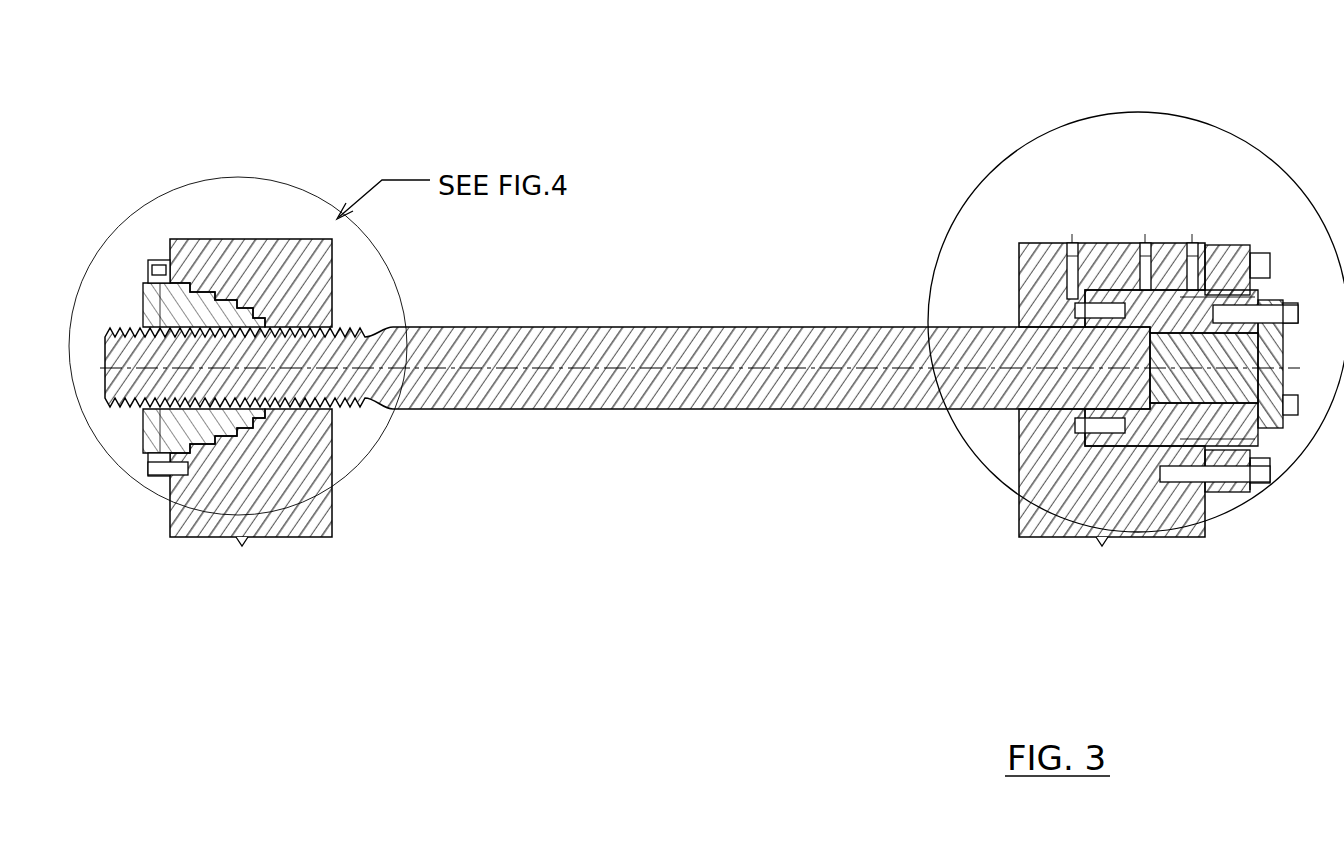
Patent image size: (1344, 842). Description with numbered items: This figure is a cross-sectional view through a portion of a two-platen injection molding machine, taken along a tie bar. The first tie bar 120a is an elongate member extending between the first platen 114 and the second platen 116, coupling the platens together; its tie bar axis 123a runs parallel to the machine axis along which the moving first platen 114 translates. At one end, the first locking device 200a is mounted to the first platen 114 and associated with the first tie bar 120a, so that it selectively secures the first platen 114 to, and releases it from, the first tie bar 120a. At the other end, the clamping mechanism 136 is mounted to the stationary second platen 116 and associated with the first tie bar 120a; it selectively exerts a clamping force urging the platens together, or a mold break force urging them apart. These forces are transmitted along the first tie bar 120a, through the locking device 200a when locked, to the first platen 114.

The first locking device 200a is at (243, 200).
The first platen 114 is at (327, 525).
The first tie bar 120a is at (633, 410).
The tie bar axis 123a is at (743, 363).
The clamping mechanism 136 is at (1173, 152).
The second platen 116 is at (1028, 523).